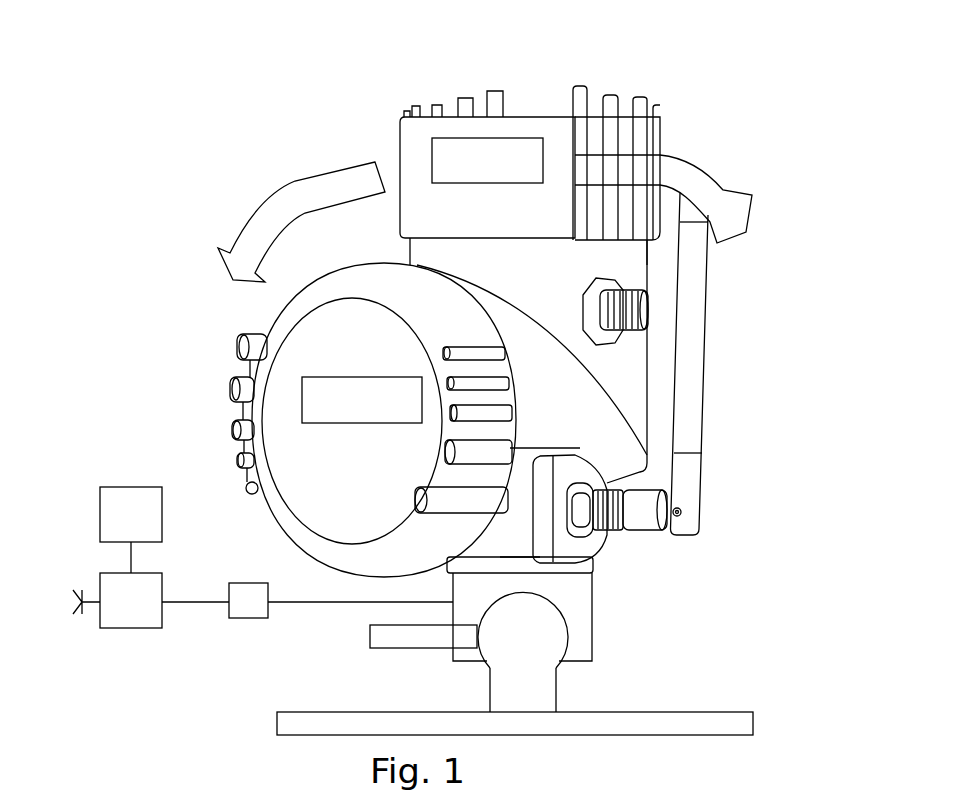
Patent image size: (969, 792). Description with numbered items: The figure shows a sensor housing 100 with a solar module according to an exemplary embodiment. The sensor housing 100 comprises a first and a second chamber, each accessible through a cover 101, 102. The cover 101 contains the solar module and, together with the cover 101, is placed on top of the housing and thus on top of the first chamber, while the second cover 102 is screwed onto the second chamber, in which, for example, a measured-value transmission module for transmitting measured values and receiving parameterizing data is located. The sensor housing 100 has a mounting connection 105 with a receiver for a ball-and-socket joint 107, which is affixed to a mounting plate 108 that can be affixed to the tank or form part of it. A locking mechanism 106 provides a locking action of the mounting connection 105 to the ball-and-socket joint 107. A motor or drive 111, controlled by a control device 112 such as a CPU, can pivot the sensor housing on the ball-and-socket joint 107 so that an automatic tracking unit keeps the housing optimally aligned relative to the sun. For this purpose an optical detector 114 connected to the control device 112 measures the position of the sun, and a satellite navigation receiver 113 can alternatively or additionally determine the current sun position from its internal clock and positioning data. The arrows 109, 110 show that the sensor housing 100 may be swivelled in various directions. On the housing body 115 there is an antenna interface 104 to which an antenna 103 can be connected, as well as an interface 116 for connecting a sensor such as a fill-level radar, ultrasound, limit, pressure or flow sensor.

The sensor housing 100 is at (693, 86).
The cover 101 is at (525, 107).
The second cover 102 is at (287, 515).
The antenna 103 is at (710, 272).
The antenna interface 104 is at (593, 537).
The mounting connection 105 is at (592, 620).
The locking mechanism 106 is at (370, 637).
The ball-and-socket joint 107 is at (490, 670).
The mounting plate 108 is at (745, 712).
The arrow 109 is at (722, 186).
The arrow 110 is at (285, 205).
The motor or drive 111 is at (250, 623).
The control device 112 is at (133, 630).
The satellite navigation receiver 113 is at (130, 485).
The optical detector 114 is at (83, 593).
The housing body 115 is at (633, 383).
The interface 116 is at (647, 310).